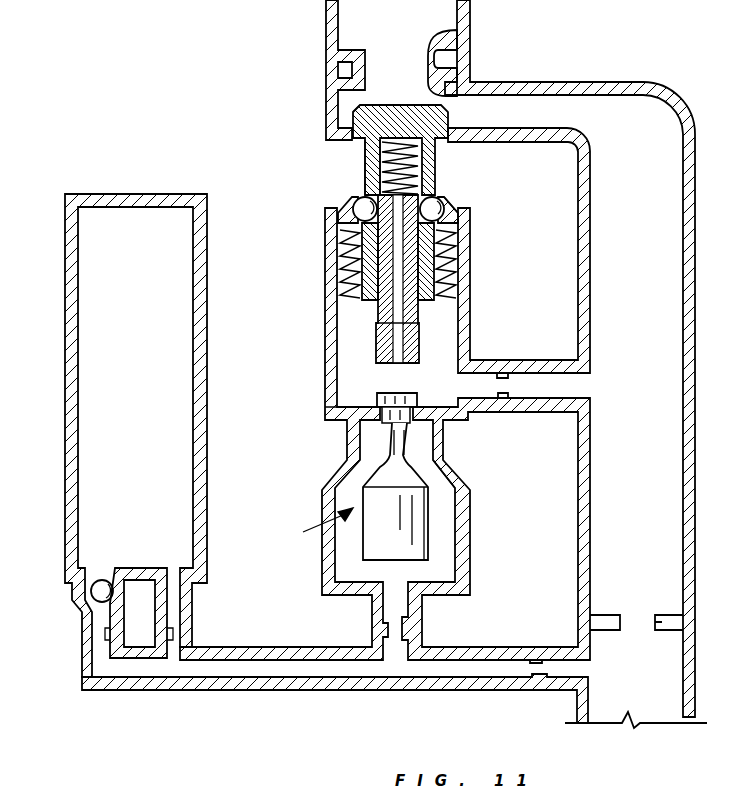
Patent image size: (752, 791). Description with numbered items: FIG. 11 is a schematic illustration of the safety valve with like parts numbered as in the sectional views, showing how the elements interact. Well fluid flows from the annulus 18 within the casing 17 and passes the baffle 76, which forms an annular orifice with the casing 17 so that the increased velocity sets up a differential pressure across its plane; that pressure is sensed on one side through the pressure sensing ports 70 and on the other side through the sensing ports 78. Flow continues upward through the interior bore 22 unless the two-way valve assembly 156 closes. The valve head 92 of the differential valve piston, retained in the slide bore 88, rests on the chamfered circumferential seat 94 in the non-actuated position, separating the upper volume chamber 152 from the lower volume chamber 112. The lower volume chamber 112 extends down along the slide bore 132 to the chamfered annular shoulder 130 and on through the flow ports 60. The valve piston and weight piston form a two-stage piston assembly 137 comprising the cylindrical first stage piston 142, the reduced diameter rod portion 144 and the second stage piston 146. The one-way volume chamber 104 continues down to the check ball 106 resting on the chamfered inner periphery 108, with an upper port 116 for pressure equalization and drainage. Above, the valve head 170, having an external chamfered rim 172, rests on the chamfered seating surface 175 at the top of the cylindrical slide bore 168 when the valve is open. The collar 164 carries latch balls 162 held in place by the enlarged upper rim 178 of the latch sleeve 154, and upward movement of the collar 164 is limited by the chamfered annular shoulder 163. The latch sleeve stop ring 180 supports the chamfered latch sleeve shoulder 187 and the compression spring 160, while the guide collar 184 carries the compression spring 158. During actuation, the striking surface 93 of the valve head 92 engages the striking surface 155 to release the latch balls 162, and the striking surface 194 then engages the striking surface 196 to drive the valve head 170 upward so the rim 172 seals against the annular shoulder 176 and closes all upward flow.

The casing 17 is at (326, 17).
The interior bore 22 is at (454, 38).
The annular shoulder 176 is at (472, 80).
The baffle 76 is at (665, 617).
The annulus 18 is at (668, 688).
The one-way volume chamber 104 is at (146, 401).
The check ball 106 is at (96, 590).
The chamfered inner periphery 108 is at (100, 637).
The upper port 116 is at (168, 640).
The lower volume chamber 112 is at (355, 673).
The pressure sensing ports 70 is at (560, 672).
The chamfered annular shoulder 130 is at (345, 485).
The flow ports 60 is at (408, 617).
The chamfered circumferential seat 94 is at (360, 418).
The cylindrical first stage piston 142 is at (380, 440).
The inner cylindrical slide bore 132 is at (445, 462).
The slide bore 88 is at (460, 417).
The compression spring 160 is at (405, 175).
The sensing ports 78 is at (505, 384).
The upper volume chamber 152 is at (455, 373).
The valve head 170 is at (437, 118).
The external chamfered rim 172 is at (352, 125).
The chamfered seating surface 175 is at (343, 133).
The collar 164 is at (370, 150).
The cylindrical slide bore 168 is at (372, 166).
The enlarged upper rim 178 is at (385, 205).
The chamfered annular shoulder 163 is at (355, 200).
The latch balls 162 is at (441, 200).
The chamfered latch sleeve shoulder 187 is at (457, 213).
The striking surface 194 is at (378, 318).
The latch sleeve 154 is at (418, 340).
The striking surface 196 is at (368, 303).
The striking surface 155 is at (380, 372).
The latch sleeve stop ring 180 is at (360, 230).
The guide collar 184 is at (433, 245).
The two-way valve assembly 156 is at (345, 262).
The compression spring 158 is at (455, 262).
The striking surface 93 is at (383, 392).
The valve head 92 is at (377, 400).
The second stage piston 146 is at (430, 505).
The reduced diameter rod portion 144 is at (404, 463).
The two-stage piston assembly 137 is at (315, 525).